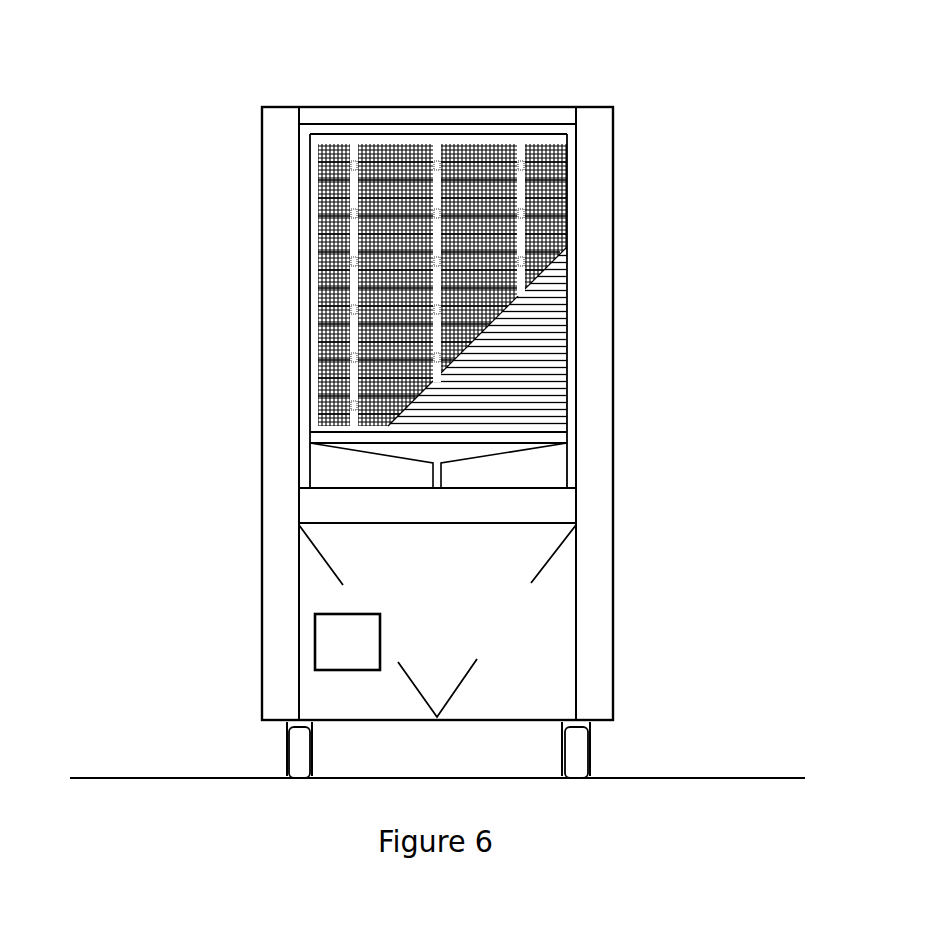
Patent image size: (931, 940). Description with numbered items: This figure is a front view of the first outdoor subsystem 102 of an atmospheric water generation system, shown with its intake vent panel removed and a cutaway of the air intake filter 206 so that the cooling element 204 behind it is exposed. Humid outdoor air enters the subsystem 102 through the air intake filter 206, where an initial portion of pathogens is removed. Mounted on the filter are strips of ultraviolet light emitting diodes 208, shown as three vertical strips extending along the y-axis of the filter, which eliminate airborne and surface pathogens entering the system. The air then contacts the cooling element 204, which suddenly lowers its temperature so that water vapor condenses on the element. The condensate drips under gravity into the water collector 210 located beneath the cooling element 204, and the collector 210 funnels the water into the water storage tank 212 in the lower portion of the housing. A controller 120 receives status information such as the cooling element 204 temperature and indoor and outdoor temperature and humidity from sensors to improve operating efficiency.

The first outdoor subsystem 102 is at (660, 119).
The controller 120 is at (352, 670).
The cooling element 204 is at (556, 292).
The air intake filter 206 is at (328, 265).
The light emitting diodes (LEDs) 208 is at (520, 143).
The water collector 210 is at (368, 452).
The water storage tank 212 is at (553, 590).